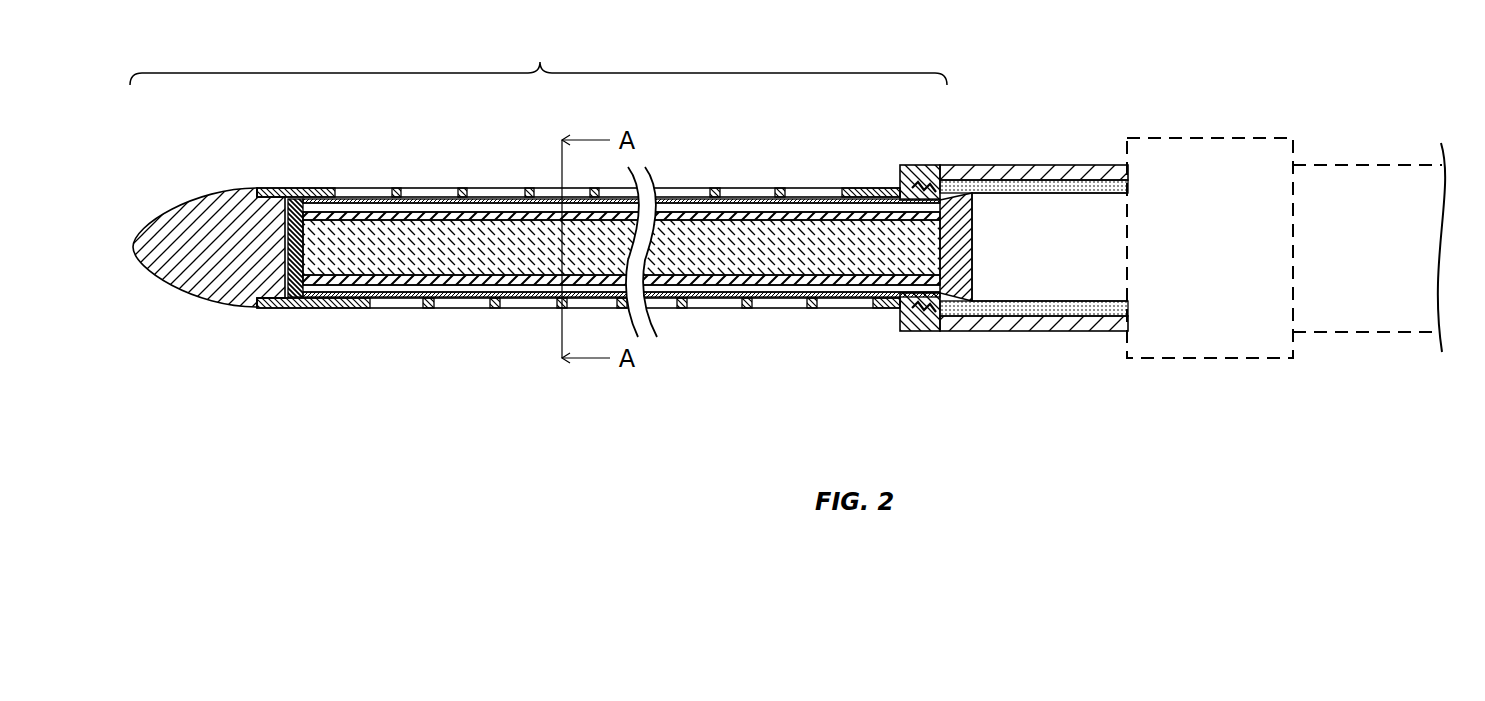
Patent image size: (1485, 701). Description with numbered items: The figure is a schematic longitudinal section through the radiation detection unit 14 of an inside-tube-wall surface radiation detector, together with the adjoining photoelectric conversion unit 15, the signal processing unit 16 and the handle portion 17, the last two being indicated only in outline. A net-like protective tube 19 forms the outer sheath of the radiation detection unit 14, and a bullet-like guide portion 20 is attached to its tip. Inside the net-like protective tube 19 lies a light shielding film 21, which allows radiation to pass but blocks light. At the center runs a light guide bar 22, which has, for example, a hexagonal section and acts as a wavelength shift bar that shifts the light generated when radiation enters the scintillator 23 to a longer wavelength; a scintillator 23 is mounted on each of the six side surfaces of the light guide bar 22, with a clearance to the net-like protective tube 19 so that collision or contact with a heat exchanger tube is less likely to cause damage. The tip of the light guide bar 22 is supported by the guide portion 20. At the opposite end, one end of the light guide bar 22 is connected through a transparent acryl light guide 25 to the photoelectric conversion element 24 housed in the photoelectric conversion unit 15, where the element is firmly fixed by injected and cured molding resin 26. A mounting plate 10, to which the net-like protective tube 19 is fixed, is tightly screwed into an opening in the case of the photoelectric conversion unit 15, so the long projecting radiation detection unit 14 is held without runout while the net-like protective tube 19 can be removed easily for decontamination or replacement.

The mounting plate 10 is at (904, 167).
The radiation detection unit 14 is at (538, 55).
The photoelectric conversion unit 15 is at (1088, 165).
The signal processing unit 16 is at (1197, 137).
The handle portion 17 is at (1388, 165).
The net-like protective tube 19 is at (395, 188).
The guide portion 20 is at (176, 204).
The light shielding film 21 is at (497, 188).
The light guide bar 22 is at (843, 258).
The scintillator 23 is at (734, 210).
The photoelectric conversion element 24 is at (1068, 280).
The transparent acryl light guide 25 is at (953, 193).
The molding resin 26 is at (1007, 310).